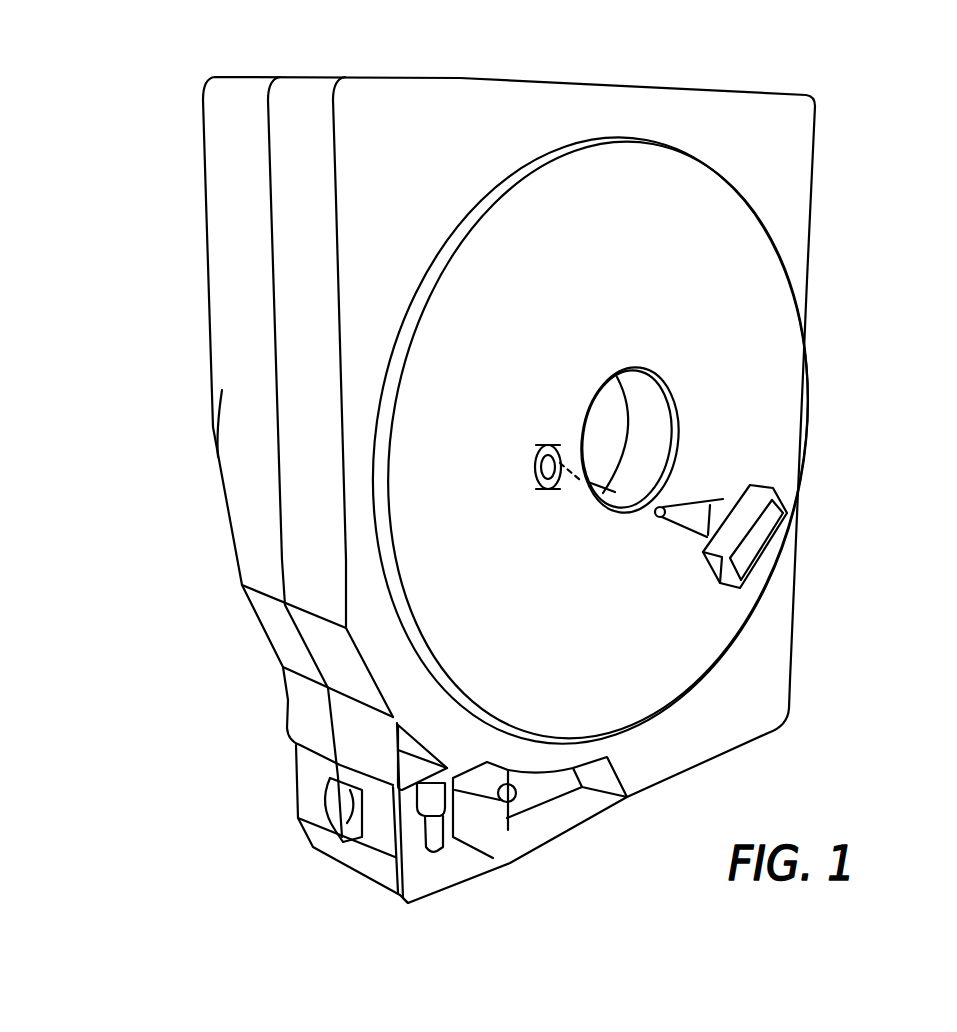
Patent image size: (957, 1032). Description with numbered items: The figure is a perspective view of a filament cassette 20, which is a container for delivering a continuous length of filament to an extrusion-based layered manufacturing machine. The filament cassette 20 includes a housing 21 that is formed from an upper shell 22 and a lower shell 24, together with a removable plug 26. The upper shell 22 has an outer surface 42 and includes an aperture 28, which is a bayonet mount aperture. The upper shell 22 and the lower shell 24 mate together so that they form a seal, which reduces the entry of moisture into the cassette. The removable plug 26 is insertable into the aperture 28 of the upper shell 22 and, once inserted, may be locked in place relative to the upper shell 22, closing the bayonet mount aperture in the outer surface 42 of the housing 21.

The filament cassette 20 is at (847, 200).
The housing 21 is at (487, 78).
The upper shell 22 is at (303, 82).
The lower shell 24 is at (248, 104).
The removable plug 26 is at (720, 567).
The aperture 28 is at (538, 448).
The outer surface 42 is at (607, 715).